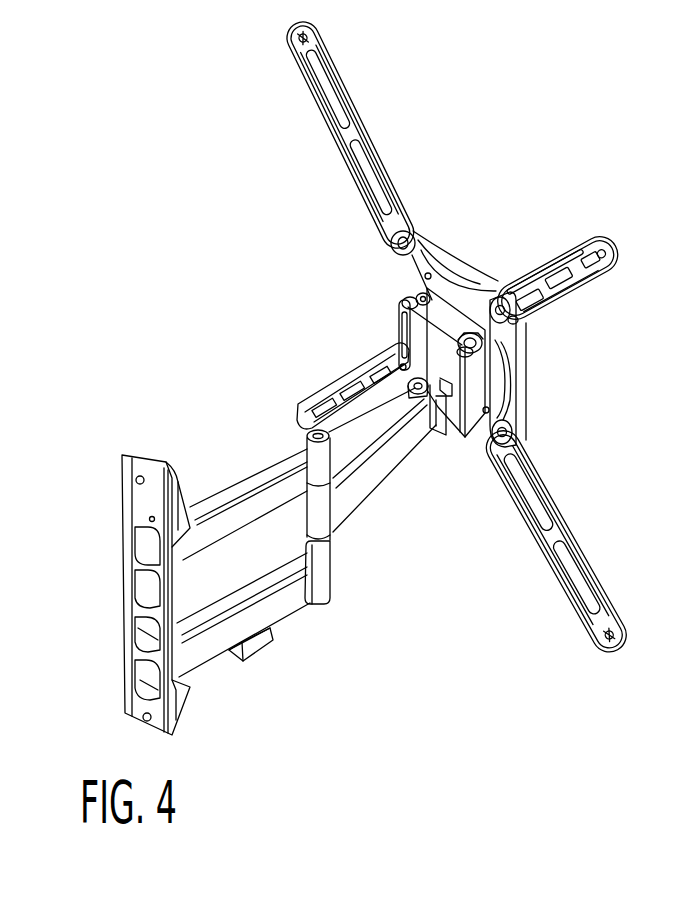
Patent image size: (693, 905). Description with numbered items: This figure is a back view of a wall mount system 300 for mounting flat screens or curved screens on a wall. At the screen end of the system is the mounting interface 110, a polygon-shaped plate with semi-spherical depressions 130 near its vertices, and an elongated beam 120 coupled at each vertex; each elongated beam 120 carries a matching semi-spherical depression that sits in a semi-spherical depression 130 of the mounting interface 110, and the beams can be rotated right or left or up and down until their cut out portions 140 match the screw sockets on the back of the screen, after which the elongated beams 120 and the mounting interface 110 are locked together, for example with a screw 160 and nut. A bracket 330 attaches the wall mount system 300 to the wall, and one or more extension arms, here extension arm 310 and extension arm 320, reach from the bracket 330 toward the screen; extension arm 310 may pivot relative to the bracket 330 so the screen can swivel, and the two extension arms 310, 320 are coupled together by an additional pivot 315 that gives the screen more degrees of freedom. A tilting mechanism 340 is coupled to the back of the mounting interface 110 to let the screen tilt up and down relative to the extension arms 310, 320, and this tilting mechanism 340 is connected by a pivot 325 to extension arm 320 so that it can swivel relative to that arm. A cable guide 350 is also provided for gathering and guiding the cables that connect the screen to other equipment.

The wall mount system 300 is at (503, 165).
The mounting interface 110 is at (392, 278).
The elongated beam 120 is at (391, 190).
The semi-spherical depression 130 is at (485, 290).
The cut out portion 140 is at (610, 254).
The screw 160 is at (513, 328).
The extension arm 310 is at (282, 452).
The pivot 315 is at (300, 431).
The extension arm 320 is at (360, 477).
The pivot 325 is at (427, 428).
The bracket 330 is at (130, 650).
The tilting mechanism 340 is at (497, 353).
The cable guide 350 is at (250, 656).